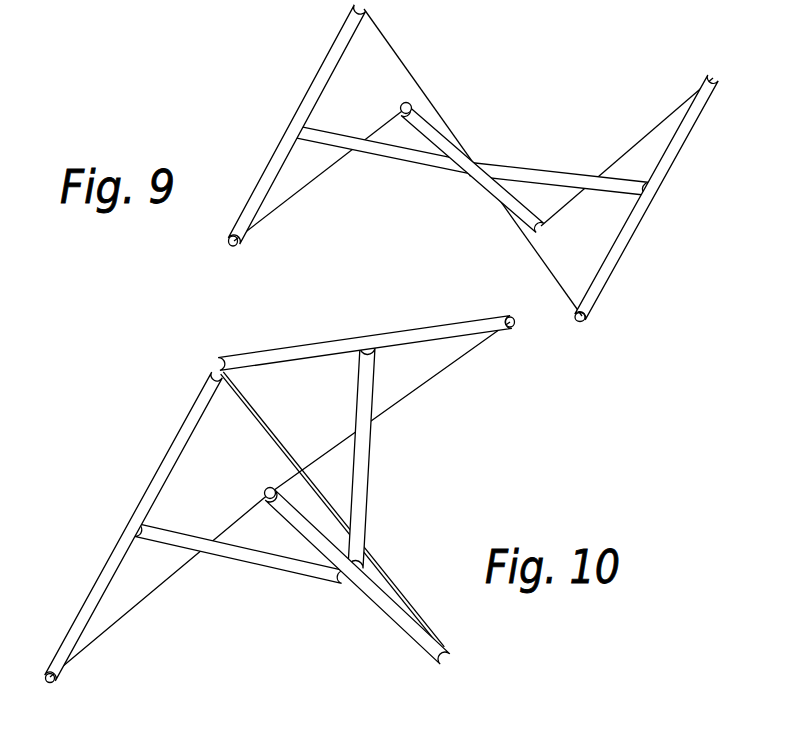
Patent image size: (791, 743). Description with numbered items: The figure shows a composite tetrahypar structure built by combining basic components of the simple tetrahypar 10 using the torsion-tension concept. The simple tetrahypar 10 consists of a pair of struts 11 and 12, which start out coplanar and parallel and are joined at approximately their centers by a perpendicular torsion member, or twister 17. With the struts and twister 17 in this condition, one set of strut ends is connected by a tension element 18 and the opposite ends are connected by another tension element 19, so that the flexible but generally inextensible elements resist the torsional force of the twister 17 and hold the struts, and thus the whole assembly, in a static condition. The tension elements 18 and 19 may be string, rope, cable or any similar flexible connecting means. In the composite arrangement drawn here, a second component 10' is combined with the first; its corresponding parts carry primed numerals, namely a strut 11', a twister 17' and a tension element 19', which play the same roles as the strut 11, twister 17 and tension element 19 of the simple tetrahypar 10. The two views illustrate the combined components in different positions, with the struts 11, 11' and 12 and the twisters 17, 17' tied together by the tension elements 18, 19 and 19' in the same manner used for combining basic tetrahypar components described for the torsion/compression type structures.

In FIG. 9, the simple tetrahypar 10 is at (214, 63).
In FIG. 10, the simple tetrahypar 10 is at (57, 524).
In FIG. 9, the second frame unit 10' is at (704, 249).
In FIG. 10, the second frame unit 10' is at (471, 458).
In FIG. 9, the strut 11 is at (264, 133).
In FIG. 10, the strut 11 is at (117, 527).
In FIG. 9, the second leg member 11' is at (646, 203).
In FIG. 10, the second leg member 11' is at (366, 327).
In FIG. 9, the strut 12 is at (427, 115).
In FIG. 10, the strut 12 is at (403, 636).
In FIG. 9, the torsion member 17 is at (382, 175).
In FIG. 10, the torsion member 17 is at (240, 576).
In FIG. 9, the second cross bar 17' is at (559, 130).
In FIG. 10, the second cross bar 17' is at (393, 458).
In FIG. 9, the tension element 18 is at (266, 222).
In FIG. 10, the tension element 18 is at (450, 372).
In FIG. 9, the tension element 19 is at (473, 159).
In FIG. 10, the tension element 19 is at (324, 511).
In FIG. 10, the second tension cord 19' is at (333, 509).